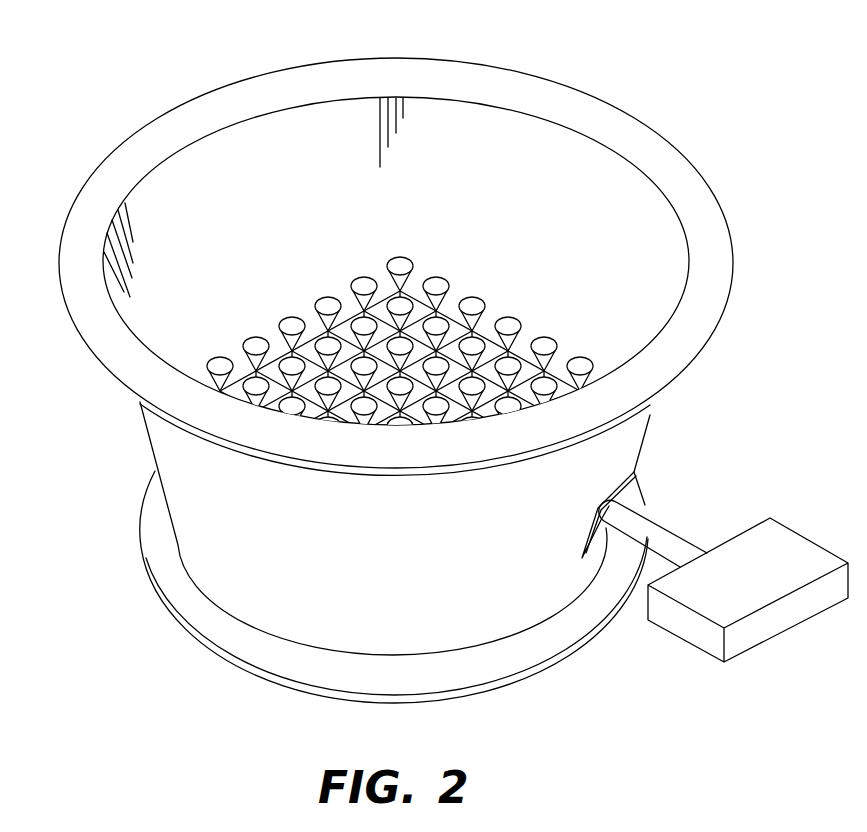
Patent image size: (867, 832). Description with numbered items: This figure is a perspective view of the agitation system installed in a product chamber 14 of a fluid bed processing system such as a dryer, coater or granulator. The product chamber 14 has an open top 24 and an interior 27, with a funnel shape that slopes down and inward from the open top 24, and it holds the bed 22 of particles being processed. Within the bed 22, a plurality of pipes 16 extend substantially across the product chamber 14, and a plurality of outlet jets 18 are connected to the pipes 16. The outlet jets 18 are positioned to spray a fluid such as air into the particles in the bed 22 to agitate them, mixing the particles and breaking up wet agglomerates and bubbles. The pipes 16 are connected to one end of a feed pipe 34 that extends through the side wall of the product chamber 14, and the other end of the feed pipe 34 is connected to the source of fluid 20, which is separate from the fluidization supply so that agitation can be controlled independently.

The product chamber 14 is at (412, 363).
The pipes 16 is at (400, 353).
The outlet jets 18 is at (510, 322).
The source of fluid 20 is at (706, 607).
The bed 22 is at (183, 221).
The open top 24 is at (440, 142).
The interior 27 is at (667, 293).
The feed pipe 34 is at (676, 543).